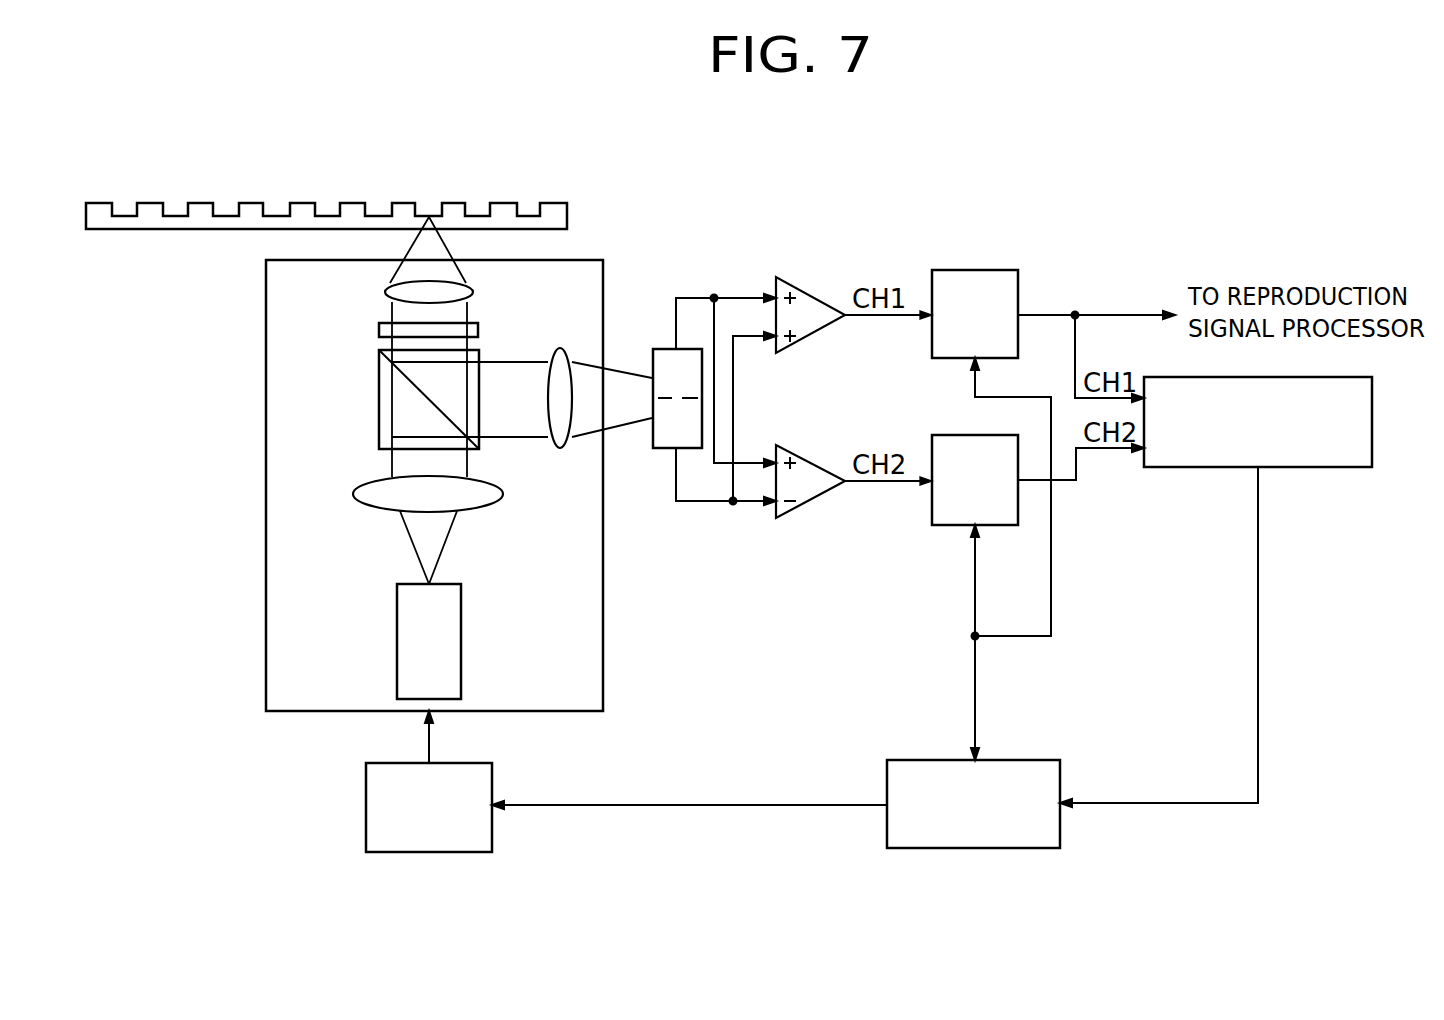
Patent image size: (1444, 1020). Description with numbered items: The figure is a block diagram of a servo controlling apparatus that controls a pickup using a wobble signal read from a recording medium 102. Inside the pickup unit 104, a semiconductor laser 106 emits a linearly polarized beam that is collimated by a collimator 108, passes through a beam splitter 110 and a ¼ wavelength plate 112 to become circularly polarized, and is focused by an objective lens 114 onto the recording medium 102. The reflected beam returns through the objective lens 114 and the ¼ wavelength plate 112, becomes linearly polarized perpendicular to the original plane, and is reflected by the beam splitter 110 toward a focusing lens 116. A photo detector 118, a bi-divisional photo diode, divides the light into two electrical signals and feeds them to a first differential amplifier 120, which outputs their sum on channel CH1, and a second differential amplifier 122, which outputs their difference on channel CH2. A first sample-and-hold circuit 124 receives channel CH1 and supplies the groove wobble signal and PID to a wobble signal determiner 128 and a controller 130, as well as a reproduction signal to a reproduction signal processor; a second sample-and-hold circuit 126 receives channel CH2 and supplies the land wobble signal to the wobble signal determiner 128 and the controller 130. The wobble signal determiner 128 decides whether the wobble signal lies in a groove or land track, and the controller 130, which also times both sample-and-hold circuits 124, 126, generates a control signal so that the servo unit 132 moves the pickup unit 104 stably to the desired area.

The recording medium 102 is at (570, 214).
The pickup unit 104 is at (265, 416).
The semiconductor laser 106 is at (397, 634).
The collimator 108 is at (360, 503).
The beam splitter 110 is at (378, 388).
The ¼ wavelength plate 112 is at (379, 330).
The objective lens 114 is at (388, 291).
The focusing lens 116 is at (553, 348).
The photo detector 118 is at (664, 349).
The first differential amplifier 120 is at (793, 278).
The second differential amplifier 122 is at (790, 445).
The first sample-and-hold circuit 124 is at (995, 270).
The second sample-and-hold circuit 126 is at (950, 435).
The wobble signal determiner 128 is at (1163, 468).
The controller 130 is at (1050, 760).
The servo unit 132 is at (493, 775).